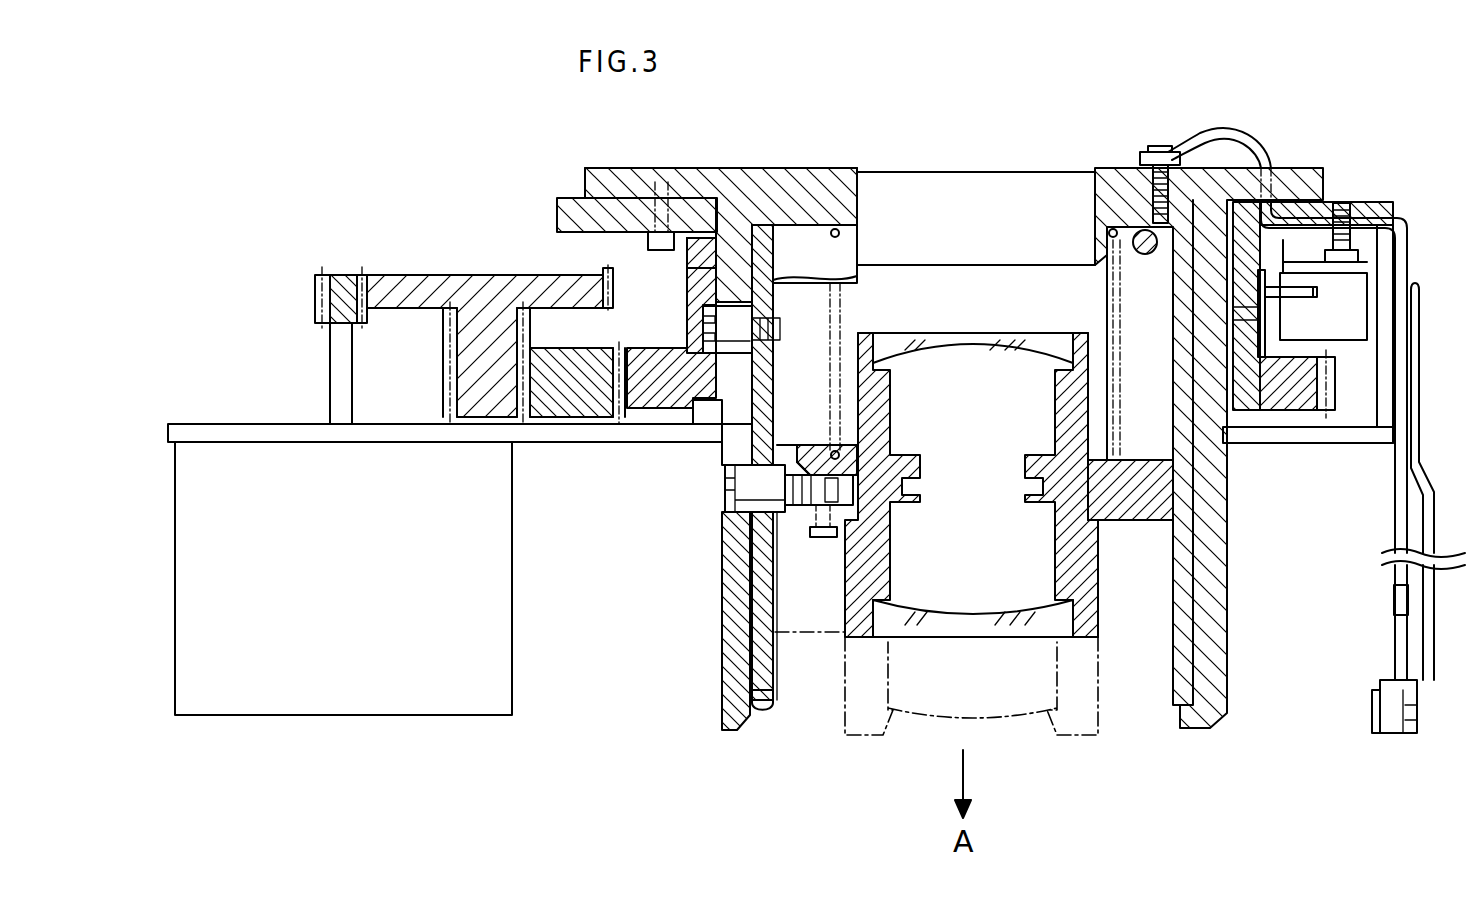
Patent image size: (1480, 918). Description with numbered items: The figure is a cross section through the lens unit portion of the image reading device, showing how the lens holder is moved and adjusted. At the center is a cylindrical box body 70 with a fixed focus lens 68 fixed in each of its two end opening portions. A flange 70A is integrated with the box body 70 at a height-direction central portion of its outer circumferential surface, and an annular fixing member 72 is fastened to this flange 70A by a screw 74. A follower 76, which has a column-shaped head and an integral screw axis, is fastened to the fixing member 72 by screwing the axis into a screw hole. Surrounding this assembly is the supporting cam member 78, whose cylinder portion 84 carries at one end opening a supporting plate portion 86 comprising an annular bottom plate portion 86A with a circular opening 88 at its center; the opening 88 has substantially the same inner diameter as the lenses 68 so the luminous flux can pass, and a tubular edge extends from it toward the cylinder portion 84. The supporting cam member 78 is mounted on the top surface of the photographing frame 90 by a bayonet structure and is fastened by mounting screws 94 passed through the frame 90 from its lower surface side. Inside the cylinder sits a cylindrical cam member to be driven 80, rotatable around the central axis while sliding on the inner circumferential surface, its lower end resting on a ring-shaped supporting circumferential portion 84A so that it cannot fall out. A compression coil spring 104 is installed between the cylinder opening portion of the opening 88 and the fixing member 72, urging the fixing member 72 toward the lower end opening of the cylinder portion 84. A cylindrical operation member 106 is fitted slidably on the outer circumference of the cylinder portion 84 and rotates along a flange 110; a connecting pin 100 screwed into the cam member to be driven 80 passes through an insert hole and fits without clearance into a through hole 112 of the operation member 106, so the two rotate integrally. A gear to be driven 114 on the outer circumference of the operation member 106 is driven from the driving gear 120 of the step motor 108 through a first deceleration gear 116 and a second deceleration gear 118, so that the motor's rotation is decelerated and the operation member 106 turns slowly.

The fixed focus lenses 68 is at (975, 333).
The box body 70 is at (877, 388).
The flange 70A is at (1118, 545).
The annular fixing member 72 is at (1147, 520).
The screw 74 is at (820, 543).
The follower 76 is at (720, 575).
The supporting cam member 78 is at (912, 122).
The cam member to be driven 80 is at (777, 652).
The cylinder portion 84 is at (860, 262).
The supporting circumferential portion 84A is at (777, 700).
The supporting plate portion 86 is at (805, 188).
The annular bottom plate portion 86A is at (1115, 176).
The opening 88 is at (990, 190).
The photographing frame 90 is at (565, 208).
The mounting screws 94 is at (650, 243).
The connecting pin 100 is at (700, 322).
The compression coil spring 104 is at (1137, 443).
The operation member 106 is at (700, 268).
The step motor 108 is at (480, 686).
The flange 110 is at (697, 424).
The through hole 112 is at (722, 287).
The gear to be driven 114 is at (648, 398).
The first deceleration gear 116 is at (447, 290).
The second deceleration gear 118 is at (598, 396).
The driving gear 120 is at (343, 285).